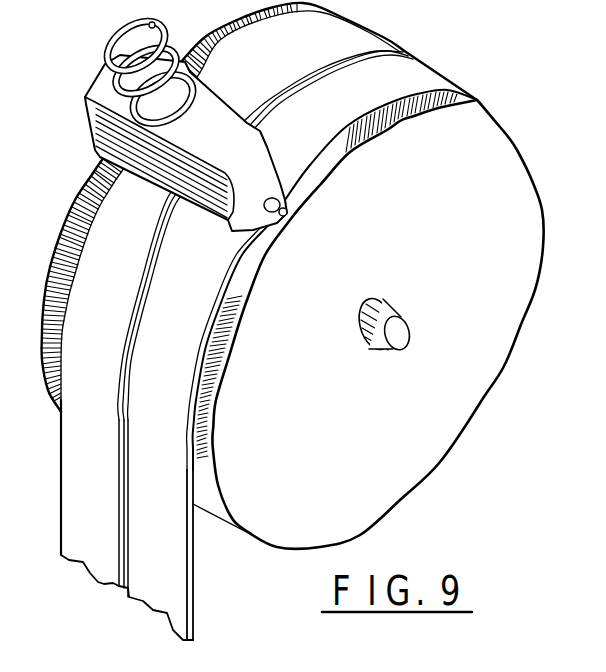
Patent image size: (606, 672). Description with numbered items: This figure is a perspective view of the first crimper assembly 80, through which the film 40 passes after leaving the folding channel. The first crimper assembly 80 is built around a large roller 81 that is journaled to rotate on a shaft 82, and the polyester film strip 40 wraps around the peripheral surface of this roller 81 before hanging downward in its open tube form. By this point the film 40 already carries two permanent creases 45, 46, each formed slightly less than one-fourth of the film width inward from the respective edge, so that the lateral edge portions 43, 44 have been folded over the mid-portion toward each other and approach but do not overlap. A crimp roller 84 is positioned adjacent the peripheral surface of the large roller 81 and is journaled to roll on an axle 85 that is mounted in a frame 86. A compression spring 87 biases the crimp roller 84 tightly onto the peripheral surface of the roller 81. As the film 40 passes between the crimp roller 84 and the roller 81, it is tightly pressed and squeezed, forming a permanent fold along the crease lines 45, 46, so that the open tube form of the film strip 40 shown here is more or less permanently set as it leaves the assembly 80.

The film 40 is at (241, 323).
The lateral edge portion 43 is at (100, 582).
The lateral edge portion 44 is at (143, 603).
The crease 45 is at (61, 467).
The crease 46 is at (193, 593).
The first crimper assembly 80 is at (194, 119).
The large roller 81 is at (521, 330).
The shaft 82 is at (410, 325).
The crimp roller 84 is at (93, 150).
The axle 85 is at (288, 213).
The frame 86 is at (97, 84).
The compression spring 87 is at (108, 42).